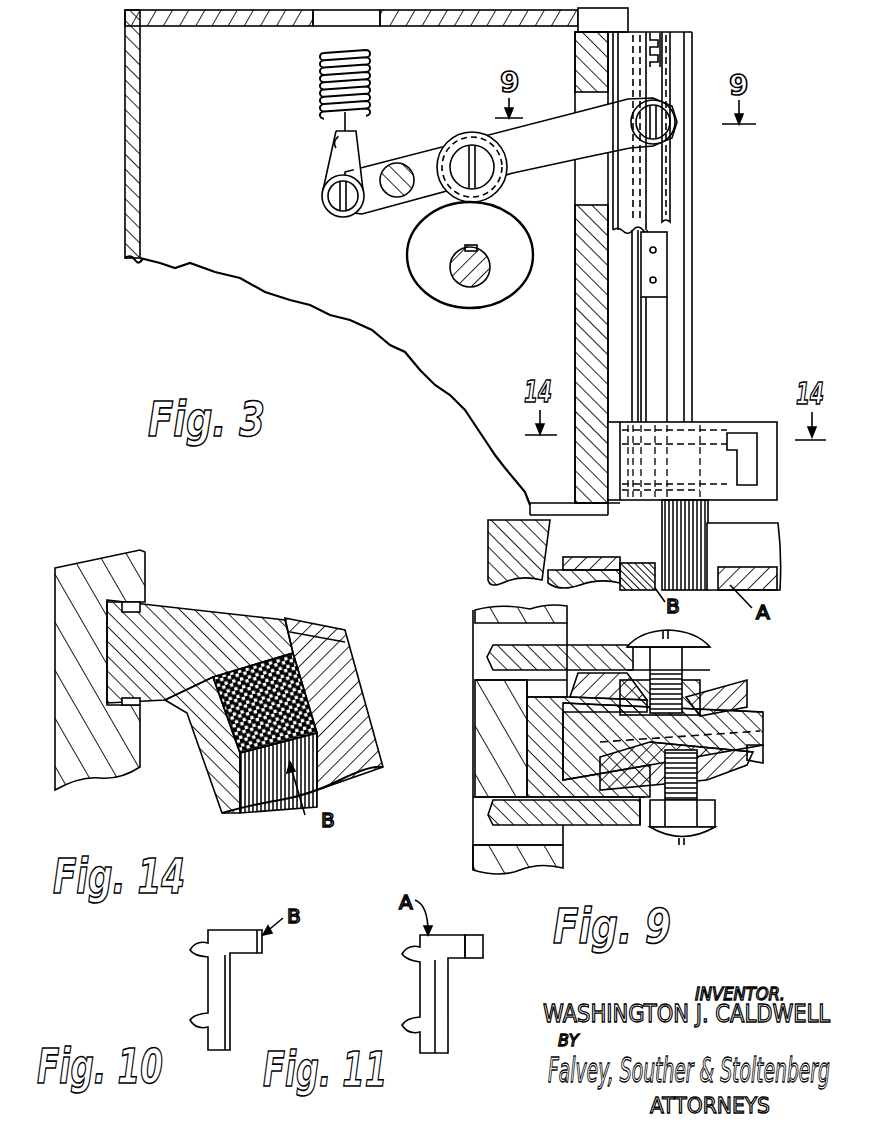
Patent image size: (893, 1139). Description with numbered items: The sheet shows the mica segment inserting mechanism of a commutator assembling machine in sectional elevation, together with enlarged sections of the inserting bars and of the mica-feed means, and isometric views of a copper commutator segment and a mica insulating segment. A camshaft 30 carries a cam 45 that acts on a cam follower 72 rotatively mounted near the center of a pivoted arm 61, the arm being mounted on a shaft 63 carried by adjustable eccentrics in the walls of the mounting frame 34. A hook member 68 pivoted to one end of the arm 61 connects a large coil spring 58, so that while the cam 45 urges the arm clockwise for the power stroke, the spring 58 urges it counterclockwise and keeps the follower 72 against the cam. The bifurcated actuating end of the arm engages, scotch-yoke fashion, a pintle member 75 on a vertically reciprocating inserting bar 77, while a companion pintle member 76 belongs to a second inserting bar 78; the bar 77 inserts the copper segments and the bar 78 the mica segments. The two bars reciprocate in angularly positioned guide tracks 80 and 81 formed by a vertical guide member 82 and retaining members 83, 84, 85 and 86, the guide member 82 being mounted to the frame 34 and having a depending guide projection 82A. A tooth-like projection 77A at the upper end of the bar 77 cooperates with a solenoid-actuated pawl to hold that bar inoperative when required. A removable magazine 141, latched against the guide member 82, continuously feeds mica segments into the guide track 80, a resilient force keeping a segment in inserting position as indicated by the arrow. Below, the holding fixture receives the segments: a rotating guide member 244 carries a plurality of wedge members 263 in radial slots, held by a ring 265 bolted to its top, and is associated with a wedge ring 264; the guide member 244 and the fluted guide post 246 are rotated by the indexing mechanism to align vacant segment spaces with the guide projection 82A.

In FIG. 3, the mounting frame 34 is at (124, 88).
In FIG. 9, the mounting frame 34 is at (478, 612).
In FIG. 14, the mounting frame 34 is at (80, 572).
In FIG. 3, the coil spring 58 is at (322, 89).
In FIG. 3, the pivoted arm 61 is at (378, 200).
In FIG. 9, the pivoted arm 61 is at (580, 815).
In FIG. 3, the shaft 63 is at (400, 163).
In FIG. 3, the hook member 68 is at (336, 161).
In FIG. 3, the cam follower 72 is at (462, 135).
In FIG. 3, the pintle member 75 is at (668, 128).
In FIG. 9, the pintle member 75 is at (690, 838).
In FIG. 9, the pintle member 76 is at (690, 633).
In FIG. 3, the inserting bar 77 is at (652, 339).
In FIG. 9, the inserting bar 77 is at (715, 778).
In FIG. 3, the tooth-like projection 77A is at (672, 38).
In FIG. 9, the inserting bar 78 is at (692, 680).
In FIG. 9, the guide track 80 is at (712, 758).
In FIG. 14, the guide track 80 is at (262, 650).
In FIG. 9, the guide track 81 is at (750, 712).
In FIG. 14, the guide track 81 is at (228, 623).
In FIG. 3, the vertical guide member 82 is at (688, 284).
In FIG. 9, the vertical guide member 82 is at (765, 728).
In FIG. 14, the vertical guide member 82 is at (317, 628).
In FIG. 3, the depending guide projection 82A is at (630, 521).
In FIG. 3, the retaining member 83 is at (630, 208).
In FIG. 9, the retaining member 83 is at (620, 788).
In FIG. 3, the retaining member 84 is at (682, 192).
In FIG. 9, the retaining member 84 is at (762, 754).
In FIG. 9, the retaining member 85 is at (600, 684).
In FIG. 9, the retaining member 86 is at (740, 692).
In FIG. 3, the camshaft 30 is at (455, 273).
In FIG. 3, the cam 45 is at (471, 302).
In FIG. 3, the removable magazine 141 is at (731, 430).
In FIG. 14, the removable magazine 141 is at (343, 680).
In FIG. 3, the rotating guide member 244 is at (570, 575).
In FIG. 3, the guide post 246 is at (700, 549).
In FIG. 3, the wedge member 263 is at (770, 583).
In FIG. 3, the wedge ring 264 is at (490, 530).
In FIG. 3, the ring 265 is at (568, 562).